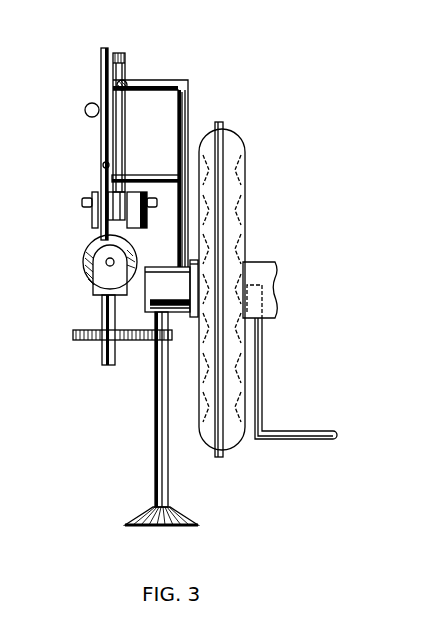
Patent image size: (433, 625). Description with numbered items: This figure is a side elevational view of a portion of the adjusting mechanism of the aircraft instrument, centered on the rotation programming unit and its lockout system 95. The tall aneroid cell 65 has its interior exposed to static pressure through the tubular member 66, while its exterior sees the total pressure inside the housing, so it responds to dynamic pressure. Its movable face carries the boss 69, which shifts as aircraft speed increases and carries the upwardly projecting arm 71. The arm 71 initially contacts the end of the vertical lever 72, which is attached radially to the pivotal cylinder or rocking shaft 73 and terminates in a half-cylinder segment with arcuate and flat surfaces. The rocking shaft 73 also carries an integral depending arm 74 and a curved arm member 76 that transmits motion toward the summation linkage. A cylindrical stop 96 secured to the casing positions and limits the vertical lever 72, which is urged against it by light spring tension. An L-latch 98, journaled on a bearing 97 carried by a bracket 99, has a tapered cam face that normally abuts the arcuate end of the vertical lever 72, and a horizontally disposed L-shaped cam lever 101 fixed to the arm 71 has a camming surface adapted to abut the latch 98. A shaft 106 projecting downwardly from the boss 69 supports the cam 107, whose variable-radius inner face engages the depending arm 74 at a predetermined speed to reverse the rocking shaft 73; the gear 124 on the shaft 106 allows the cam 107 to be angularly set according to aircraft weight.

The aneroid cell 65 is at (237, 133).
The tubular member 66 is at (287, 440).
The boss 69 is at (178, 312).
The arm 71 is at (182, 103).
The vertical lever 72 is at (101, 138).
The pivotal cylinder 73 is at (87, 257).
The depending arm 74 is at (102, 312).
The curved arm member 76 is at (103, 165).
The lockout system 95 is at (118, 43).
The cylindrical stop 96 is at (85, 110).
The bearing 97 is at (82, 203).
The L-latch 98 is at (127, 80).
The bracket 99 is at (92, 217).
The L-shaped cam lever 101 is at (152, 175).
The shaft 106 is at (155, 450).
The cam 107 is at (85, 340).
The gear 124 is at (193, 516).